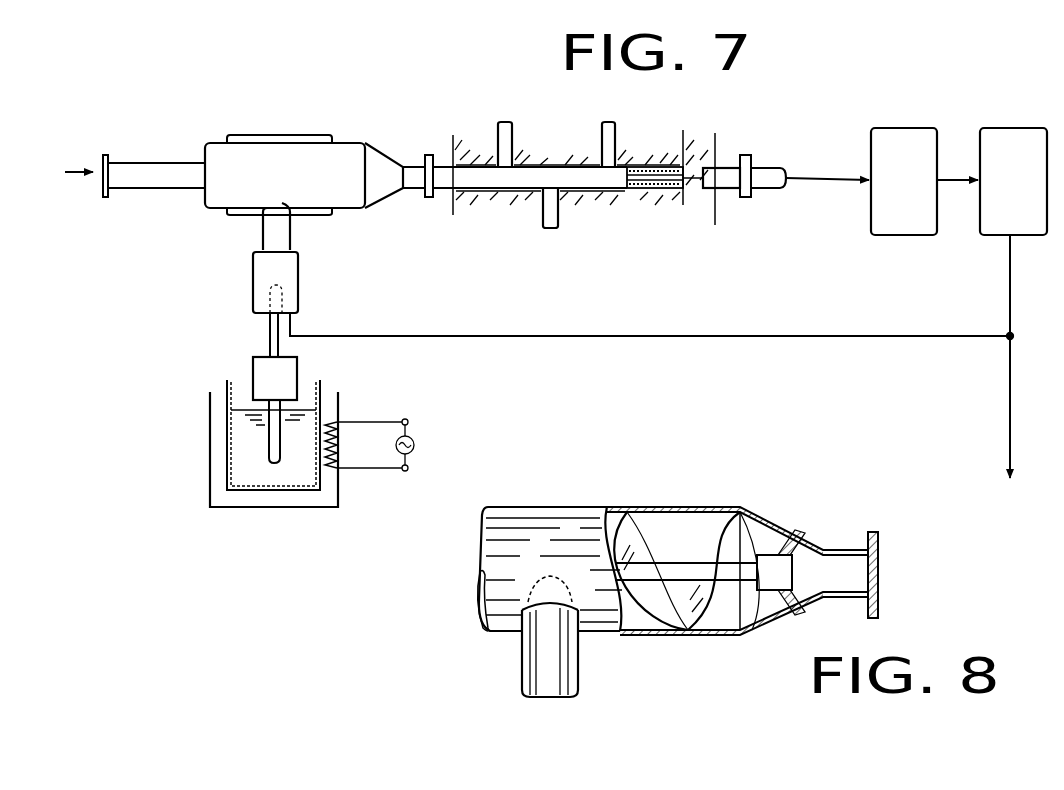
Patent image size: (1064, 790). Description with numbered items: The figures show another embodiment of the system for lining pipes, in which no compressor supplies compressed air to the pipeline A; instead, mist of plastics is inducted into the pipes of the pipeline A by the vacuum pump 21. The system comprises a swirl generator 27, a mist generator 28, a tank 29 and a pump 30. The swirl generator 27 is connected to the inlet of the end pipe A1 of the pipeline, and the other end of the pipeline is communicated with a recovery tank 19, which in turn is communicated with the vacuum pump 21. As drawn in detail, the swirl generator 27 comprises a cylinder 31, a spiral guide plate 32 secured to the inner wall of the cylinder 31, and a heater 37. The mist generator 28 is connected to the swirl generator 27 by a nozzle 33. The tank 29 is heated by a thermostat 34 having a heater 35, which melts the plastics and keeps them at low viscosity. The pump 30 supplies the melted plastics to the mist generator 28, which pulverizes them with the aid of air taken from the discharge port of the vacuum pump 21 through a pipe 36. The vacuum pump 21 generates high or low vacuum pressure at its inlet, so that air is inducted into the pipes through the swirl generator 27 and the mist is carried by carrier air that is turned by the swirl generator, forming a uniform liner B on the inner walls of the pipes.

In FIG. 7, the recovery tank 19 is at (924, 136).
In FIG. 7, the vacuum pump 21 is at (1029, 136).
In FIG. 7, the swirl generator 27 is at (353, 150).
In FIG. 8, the swirl generator 27 is at (666, 503).
In FIG. 7, the mist generator 28 is at (308, 276).
In FIG. 7, the tank 29 is at (228, 437).
In FIG. 7, the pump 30 is at (258, 367).
In FIG. 8, the cylinder 31 is at (613, 502).
In FIG. 8, the spiral guide plate 32 is at (702, 636).
In FIG. 7, the nozzle 33 is at (278, 235).
In FIG. 8, the nozzle 33 is at (565, 670).
In FIG. 7, the thermostat 34 is at (291, 507).
In FIG. 7, the heater 35 is at (338, 452).
In FIG. 7, the pipe 36 is at (596, 339).
In FIG. 7, the heater 37 is at (255, 134).
In FIG. 7, the pipeline A is at (723, 188).
In FIG. 7, the end pipe A1 is at (555, 176).
In FIG. 7, the liner B is at (643, 200).